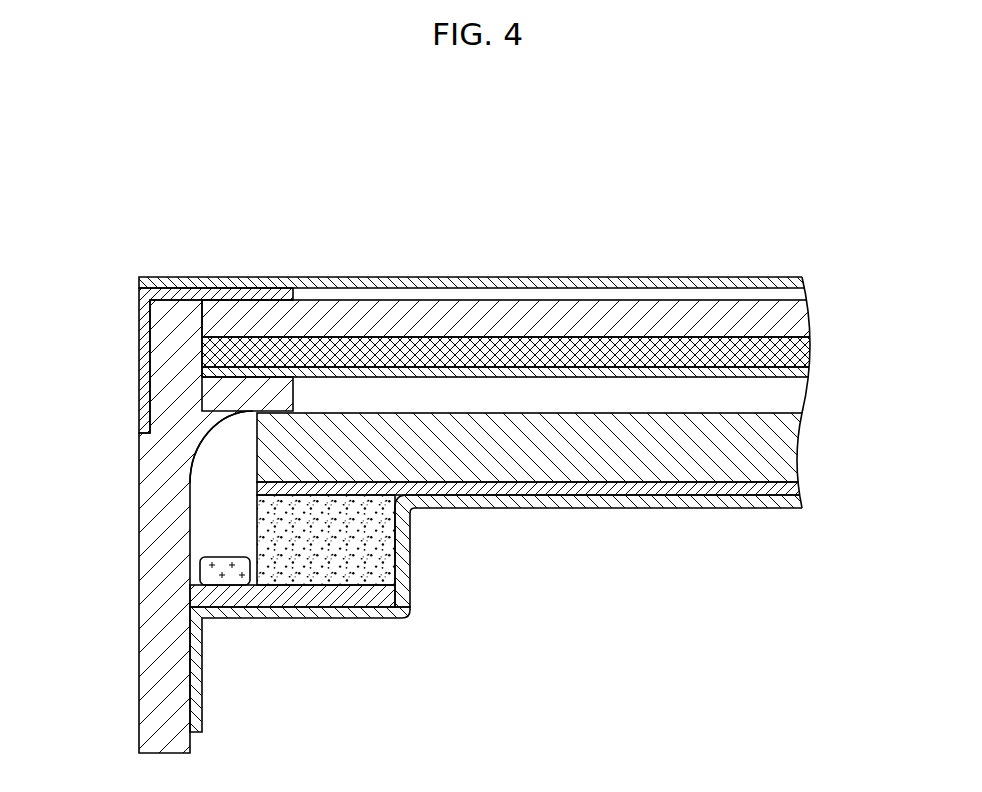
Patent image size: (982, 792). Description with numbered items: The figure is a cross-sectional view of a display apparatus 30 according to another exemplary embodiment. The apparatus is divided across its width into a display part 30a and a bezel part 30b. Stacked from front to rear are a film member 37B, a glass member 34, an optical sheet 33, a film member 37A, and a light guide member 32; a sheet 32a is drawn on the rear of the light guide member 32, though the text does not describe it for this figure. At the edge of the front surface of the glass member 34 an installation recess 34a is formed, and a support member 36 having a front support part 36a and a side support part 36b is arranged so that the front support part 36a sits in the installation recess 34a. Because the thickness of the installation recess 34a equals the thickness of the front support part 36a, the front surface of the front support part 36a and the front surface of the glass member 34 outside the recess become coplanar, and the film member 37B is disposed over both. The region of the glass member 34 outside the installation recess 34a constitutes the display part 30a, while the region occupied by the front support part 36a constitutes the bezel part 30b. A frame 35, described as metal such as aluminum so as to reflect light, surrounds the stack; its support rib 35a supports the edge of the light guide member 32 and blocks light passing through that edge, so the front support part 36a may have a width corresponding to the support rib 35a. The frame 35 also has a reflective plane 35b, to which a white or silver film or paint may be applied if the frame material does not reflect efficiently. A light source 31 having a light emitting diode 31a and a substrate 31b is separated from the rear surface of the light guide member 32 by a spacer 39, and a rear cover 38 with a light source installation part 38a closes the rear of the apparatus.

The display apparatus 30 is at (469, 136).
The display part 30a is at (302, 237).
The bezel part 30b is at (287, 237).
The light source 31 is at (75, 575).
The light emitting diode 31a is at (205, 573).
The substrate 31b is at (203, 600).
The light guide member 32 is at (777, 451).
The reflective sheet 32a is at (785, 491).
The optical sheet 33 is at (787, 350).
The glass member 34 is at (785, 312).
The installation recess 34a is at (248, 300).
The frame 35 is at (130, 494).
The support rib 35a is at (291, 396).
The reflective plane 35b is at (195, 460).
The support member 36 is at (75, 247).
The front support part 36a is at (190, 292).
The side support part 36b is at (140, 325).
The film member 37A is at (797, 373).
The film member 37B is at (533, 284).
The rear cover 38 is at (593, 522).
The light source installation part 38a is at (348, 620).
The spacer 39 is at (273, 532).